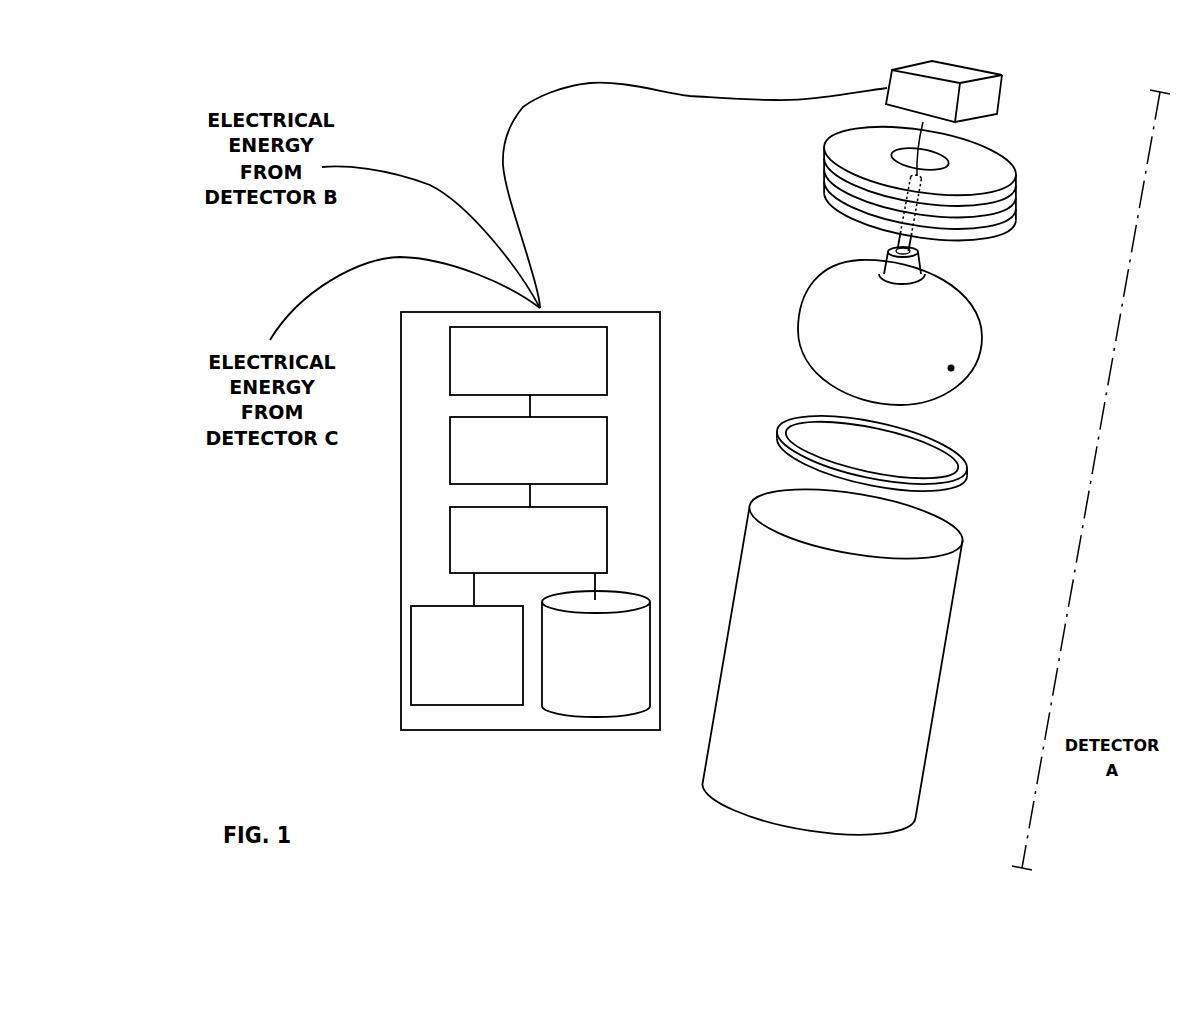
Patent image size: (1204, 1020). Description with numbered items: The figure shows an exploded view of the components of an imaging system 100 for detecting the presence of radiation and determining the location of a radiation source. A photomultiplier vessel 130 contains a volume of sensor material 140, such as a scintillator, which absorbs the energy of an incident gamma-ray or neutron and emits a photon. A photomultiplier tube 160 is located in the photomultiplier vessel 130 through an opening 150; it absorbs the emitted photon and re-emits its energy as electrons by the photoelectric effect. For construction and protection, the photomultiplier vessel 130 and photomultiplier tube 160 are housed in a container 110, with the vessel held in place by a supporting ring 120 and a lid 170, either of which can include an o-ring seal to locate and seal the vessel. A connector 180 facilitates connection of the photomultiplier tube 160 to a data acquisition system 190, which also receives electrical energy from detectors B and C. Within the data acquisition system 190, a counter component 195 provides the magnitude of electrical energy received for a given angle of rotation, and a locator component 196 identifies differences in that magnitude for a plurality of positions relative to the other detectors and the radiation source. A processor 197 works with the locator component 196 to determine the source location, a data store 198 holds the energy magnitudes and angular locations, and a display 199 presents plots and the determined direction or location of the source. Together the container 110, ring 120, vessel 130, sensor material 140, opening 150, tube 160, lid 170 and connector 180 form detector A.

The imaging system 100 is at (402, 93).
The container 110 is at (948, 623).
The supporting ring 120 is at (972, 459).
The photomultiplier vessel 130 is at (982, 333).
The sensor material 140 is at (955, 369).
The opening 150 is at (920, 260).
The photomultiplier tube 160 is at (897, 240).
The lid 170 is at (820, 187).
The connector 180 is at (1003, 97).
The data acquisition system 190 is at (401, 688).
The counter component 195 is at (528, 361).
The locator component 196 is at (528, 450).
The processor 197 is at (528, 540).
The data store 198 is at (596, 654).
The display 199 is at (467, 655).